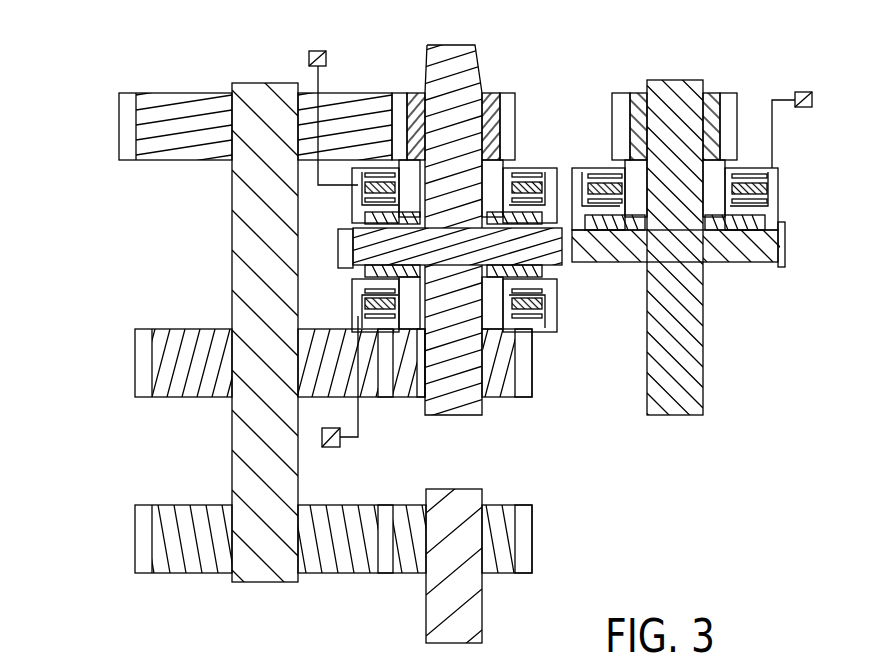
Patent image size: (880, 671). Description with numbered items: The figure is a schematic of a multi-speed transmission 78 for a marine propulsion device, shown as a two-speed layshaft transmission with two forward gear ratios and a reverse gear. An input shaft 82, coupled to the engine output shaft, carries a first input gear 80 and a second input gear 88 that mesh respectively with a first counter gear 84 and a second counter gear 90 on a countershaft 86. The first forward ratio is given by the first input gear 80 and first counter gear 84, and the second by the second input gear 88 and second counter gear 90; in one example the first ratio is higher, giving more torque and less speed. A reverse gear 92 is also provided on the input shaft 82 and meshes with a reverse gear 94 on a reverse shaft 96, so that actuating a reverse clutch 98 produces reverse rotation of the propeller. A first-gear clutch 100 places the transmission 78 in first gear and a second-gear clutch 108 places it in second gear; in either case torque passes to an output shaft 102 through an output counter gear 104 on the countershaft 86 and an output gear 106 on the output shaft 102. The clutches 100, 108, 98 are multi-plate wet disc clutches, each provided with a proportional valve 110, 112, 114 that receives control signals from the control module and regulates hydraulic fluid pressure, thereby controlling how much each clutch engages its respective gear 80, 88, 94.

The multi-speed transmission 78 is at (144, 29).
The first input gear 80 is at (517, 113).
The input shaft 82 is at (426, 58).
The first counter gear 84 is at (119, 125).
The countershaft 86 is at (232, 273).
The second input gear 88 is at (534, 365).
The second counter gear 90 is at (135, 362).
The reverse gear 92 is at (338, 243).
The reverse gear 94 is at (786, 240).
The reverse shaft 96 is at (704, 332).
The reverse clutch 98 is at (778, 192).
The first-gear clutch 100 is at (534, 170).
The output shaft 102 is at (482, 604).
The output counter gear 104 is at (135, 532).
The output gear 106 is at (532, 538).
The second-gear clutch 108 is at (560, 290).
The proportional valve 110 is at (318, 50).
The proportional valve 112 is at (333, 447).
The proportional valve 114 is at (803, 92).